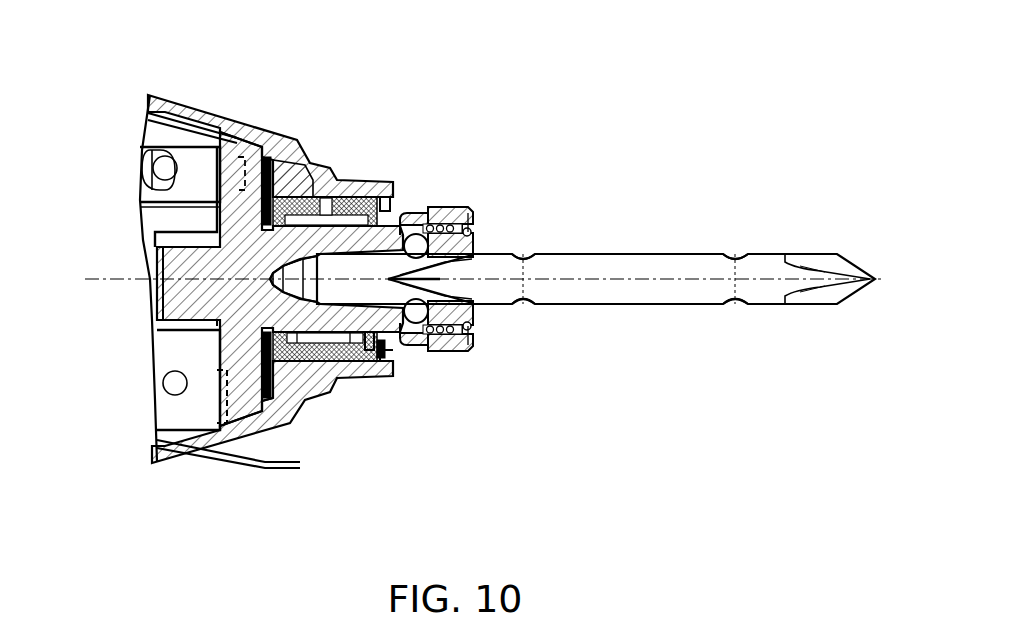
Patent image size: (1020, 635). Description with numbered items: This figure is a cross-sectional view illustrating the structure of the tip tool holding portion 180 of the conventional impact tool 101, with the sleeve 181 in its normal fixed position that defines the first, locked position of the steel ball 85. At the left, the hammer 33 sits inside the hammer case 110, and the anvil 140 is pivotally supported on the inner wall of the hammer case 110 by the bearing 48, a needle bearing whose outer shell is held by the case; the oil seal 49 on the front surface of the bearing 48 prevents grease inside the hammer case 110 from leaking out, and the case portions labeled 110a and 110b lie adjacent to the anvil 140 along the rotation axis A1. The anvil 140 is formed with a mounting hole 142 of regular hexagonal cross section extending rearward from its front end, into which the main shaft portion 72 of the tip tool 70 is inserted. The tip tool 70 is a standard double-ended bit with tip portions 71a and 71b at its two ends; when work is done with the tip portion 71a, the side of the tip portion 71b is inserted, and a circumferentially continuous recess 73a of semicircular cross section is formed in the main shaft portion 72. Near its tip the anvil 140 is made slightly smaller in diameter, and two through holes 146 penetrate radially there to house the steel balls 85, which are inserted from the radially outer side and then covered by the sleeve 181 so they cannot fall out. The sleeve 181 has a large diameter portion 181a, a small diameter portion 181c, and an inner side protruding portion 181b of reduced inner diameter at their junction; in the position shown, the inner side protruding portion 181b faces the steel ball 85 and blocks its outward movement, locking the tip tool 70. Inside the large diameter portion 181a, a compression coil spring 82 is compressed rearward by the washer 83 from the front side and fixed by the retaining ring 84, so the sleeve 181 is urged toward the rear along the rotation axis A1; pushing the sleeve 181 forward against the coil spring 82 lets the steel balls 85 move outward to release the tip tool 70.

The conventional impact tool 101 is at (100, 103).
The rotation axis A1 is at (484, 279).
The hammer 33 is at (180, 420).
The hammer case 110 is at (314, 266).
The inner wall of gear housing 110a is at (399, 360).
The spacer ring 110b is at (375, 350).
The anvil 140 is at (318, 197).
The mounting hole 142 is at (330, 310).
The bearing 48 is at (293, 353).
The oil seal 49 is at (373, 345).
The tip tool holding portion 180 is at (475, 200).
The sleeve 181 is at (435, 217).
The large diameter portion 181a is at (440, 217).
The inner side protruding portion 181b is at (412, 217).
The small diameter portion 181c is at (393, 217).
The steel ball 85 is at (424, 240).
The through hole 146 is at (477, 312).
The coil spring 82 is at (435, 345).
The washer 83 is at (458, 333).
The retaining ring 84 is at (473, 322).
The tip tool 70 is at (762, 248).
The main shaft portion 72 is at (613, 296).
The recess 73a is at (530, 298).
The tip portion 71a is at (851, 306).
The tip portion 71b is at (391, 268).